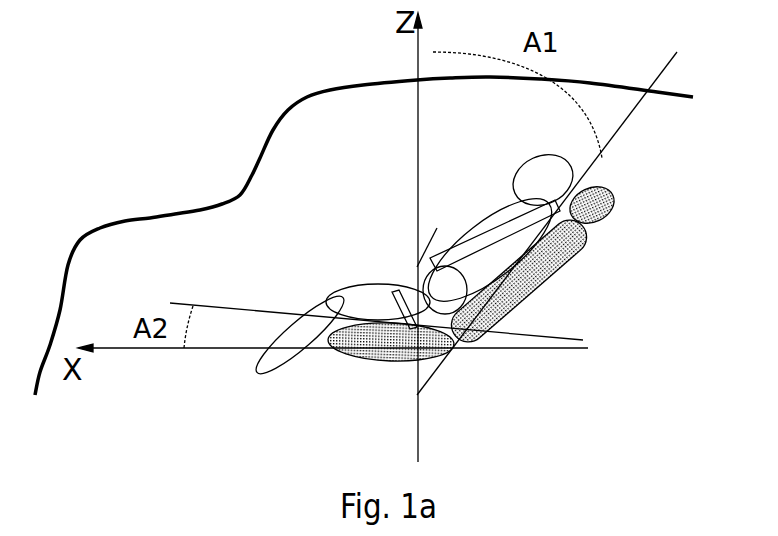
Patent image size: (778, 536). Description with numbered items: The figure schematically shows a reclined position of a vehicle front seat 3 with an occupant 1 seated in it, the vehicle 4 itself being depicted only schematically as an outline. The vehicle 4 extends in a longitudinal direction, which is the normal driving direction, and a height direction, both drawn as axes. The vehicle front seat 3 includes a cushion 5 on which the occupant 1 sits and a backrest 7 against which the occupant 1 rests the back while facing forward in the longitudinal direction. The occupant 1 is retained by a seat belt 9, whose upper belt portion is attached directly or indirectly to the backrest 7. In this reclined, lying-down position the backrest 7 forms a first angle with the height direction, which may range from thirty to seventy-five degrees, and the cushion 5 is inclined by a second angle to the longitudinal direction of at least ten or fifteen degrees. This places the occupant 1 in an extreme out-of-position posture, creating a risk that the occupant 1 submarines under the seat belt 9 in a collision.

The occupant 1 is at (503, 195).
The vehicle front seat 3 is at (590, 268).
The vehicle 4 is at (285, 112).
The cushion 5 is at (390, 342).
The backrest 7 is at (518, 281).
The seat belt 9 is at (453, 248).